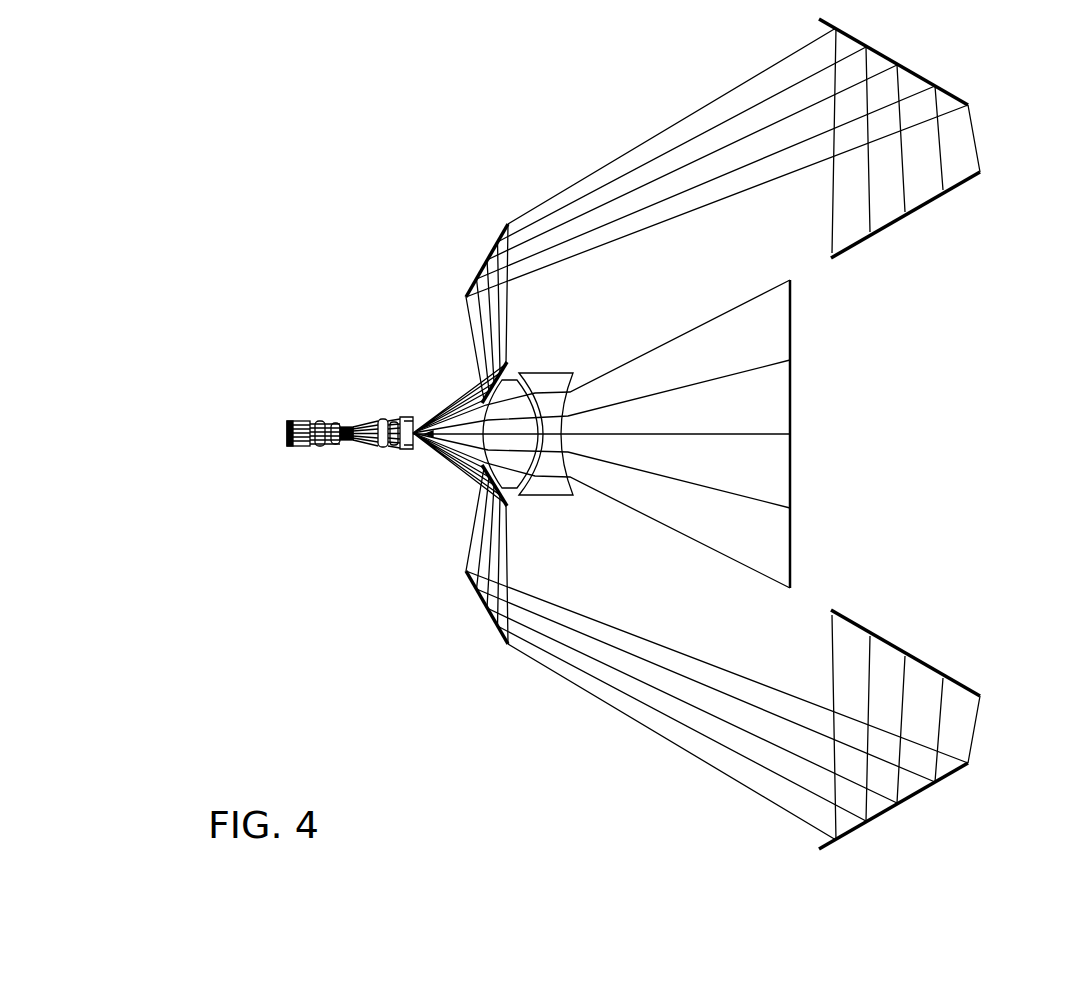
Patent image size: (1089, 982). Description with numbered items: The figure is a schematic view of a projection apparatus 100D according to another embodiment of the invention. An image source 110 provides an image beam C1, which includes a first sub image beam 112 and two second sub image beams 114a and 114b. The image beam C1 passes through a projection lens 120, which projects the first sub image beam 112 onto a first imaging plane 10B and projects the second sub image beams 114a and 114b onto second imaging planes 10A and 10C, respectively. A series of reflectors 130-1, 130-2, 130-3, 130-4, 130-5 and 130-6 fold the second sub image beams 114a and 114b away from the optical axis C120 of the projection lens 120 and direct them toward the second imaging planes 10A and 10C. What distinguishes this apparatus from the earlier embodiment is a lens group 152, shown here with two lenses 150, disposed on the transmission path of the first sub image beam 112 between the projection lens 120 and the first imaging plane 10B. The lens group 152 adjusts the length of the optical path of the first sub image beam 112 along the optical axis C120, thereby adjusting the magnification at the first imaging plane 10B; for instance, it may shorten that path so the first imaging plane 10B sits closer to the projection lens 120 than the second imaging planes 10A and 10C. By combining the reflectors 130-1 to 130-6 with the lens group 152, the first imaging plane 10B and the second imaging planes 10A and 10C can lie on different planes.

The projection apparatus 100D is at (243, 120).
The image source 110 is at (295, 461).
The projection lens 120 is at (330, 461).
The image beam C1 is at (368, 444).
The optical axis of the projection lens C120 is at (413, 424).
The reflector 130-1 is at (508, 364).
The reflector 130-2 is at (508, 508).
The reflector 130-3 is at (490, 258).
The reflector 130-4 is at (490, 613).
The reflector 130-5 is at (922, 72).
The reflector 130-6 is at (895, 822).
The lens 150 is at (510, 377).
The lens group 152 is at (632, 337).
The first sub image beam 112 is at (750, 430).
The second sub image beam 114a is at (646, 135).
The second sub image beam 114b is at (627, 724).
The second imaging plane 10A is at (918, 222).
The first imaging plane 10B is at (805, 437).
The second imaging plane 10C is at (924, 635).